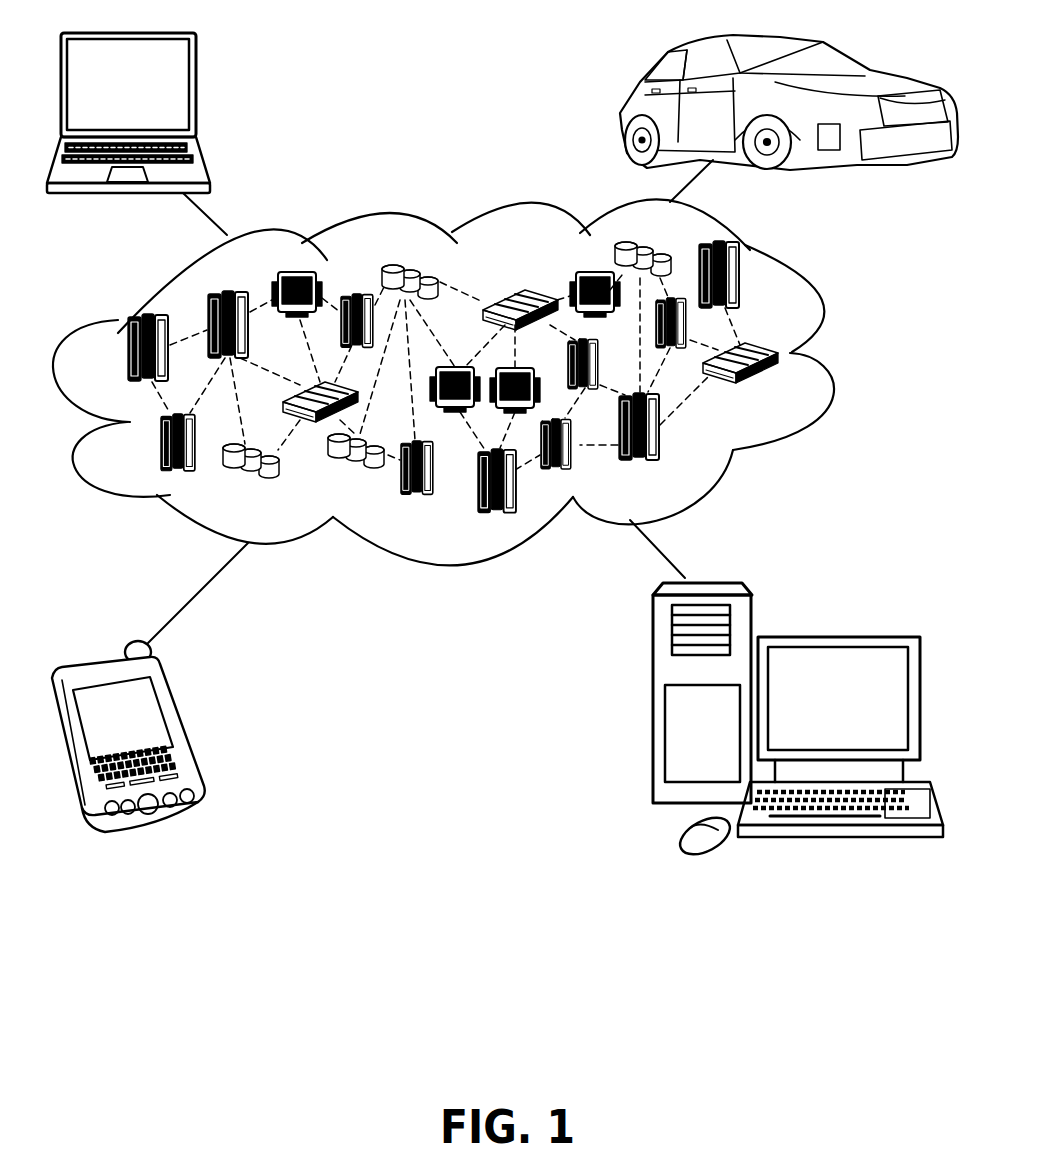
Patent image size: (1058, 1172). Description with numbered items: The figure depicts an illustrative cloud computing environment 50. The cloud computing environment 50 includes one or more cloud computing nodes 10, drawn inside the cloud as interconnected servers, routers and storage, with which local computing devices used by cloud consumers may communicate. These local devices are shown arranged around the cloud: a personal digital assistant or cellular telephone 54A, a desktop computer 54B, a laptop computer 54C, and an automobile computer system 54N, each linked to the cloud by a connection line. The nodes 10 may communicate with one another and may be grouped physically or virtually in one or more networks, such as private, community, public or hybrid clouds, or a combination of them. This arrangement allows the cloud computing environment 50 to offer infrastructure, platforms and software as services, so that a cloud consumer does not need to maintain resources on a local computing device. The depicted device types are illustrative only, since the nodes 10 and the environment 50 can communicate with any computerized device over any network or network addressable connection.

The cloud computing nodes 10 is at (790, 390).
The cloud computing environment 50 is at (837, 360).
The personal digital assistant or cellular telephone 54A is at (186, 731).
The desktop computer 54B is at (837, 637).
The laptop computer 54C is at (196, 93).
The automobile computer system 54N is at (622, 108).